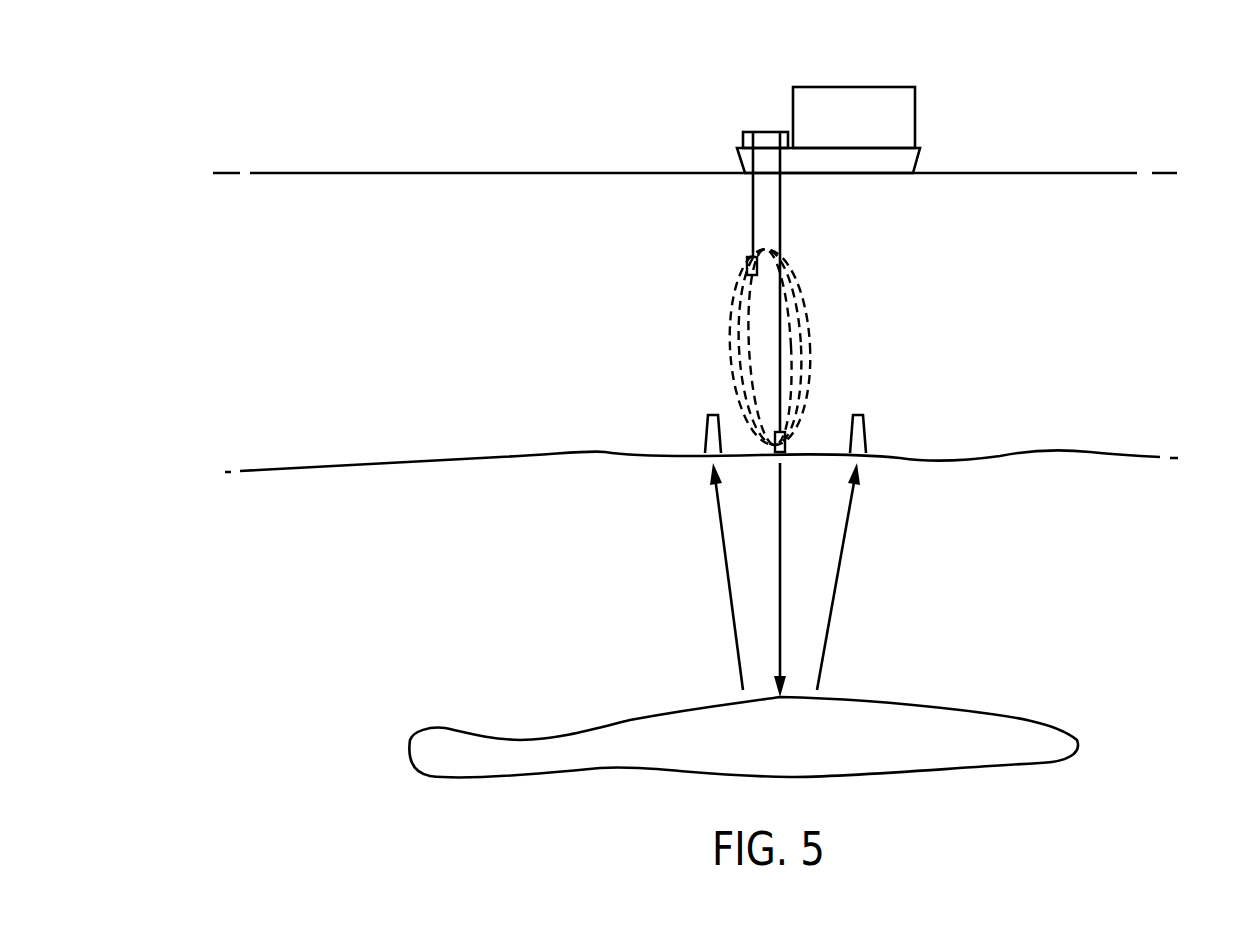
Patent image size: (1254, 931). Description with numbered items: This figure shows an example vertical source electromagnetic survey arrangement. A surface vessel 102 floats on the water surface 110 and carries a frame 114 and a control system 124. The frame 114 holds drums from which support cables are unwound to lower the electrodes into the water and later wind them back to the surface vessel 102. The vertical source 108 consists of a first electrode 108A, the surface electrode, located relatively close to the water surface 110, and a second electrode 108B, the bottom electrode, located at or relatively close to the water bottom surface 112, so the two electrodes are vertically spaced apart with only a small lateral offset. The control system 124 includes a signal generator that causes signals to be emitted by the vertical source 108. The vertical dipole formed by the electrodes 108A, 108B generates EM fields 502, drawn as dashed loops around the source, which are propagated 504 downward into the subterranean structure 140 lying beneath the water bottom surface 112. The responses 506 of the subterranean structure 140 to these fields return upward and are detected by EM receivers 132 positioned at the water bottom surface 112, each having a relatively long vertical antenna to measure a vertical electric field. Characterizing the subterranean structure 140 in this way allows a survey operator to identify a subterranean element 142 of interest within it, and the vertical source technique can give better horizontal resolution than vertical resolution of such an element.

The surface vessel 102 is at (938, 108).
The vertical source 108 is at (681, 354).
The first electrode 108A is at (747, 260).
The second electrode 108B is at (776, 437).
The water surface 110 is at (588, 173).
The water bottom surface 112 is at (1050, 450).
The frame 114 is at (750, 132).
The control system 124 is at (853, 87).
The EM receivers 132 is at (707, 432).
The subterranean structure 140 is at (1133, 462).
The subterranean element 142 is at (920, 717).
The EM fields 502 is at (810, 322).
The propagation of EM fields 504 is at (778, 575).
The responses 506 is at (727, 585).